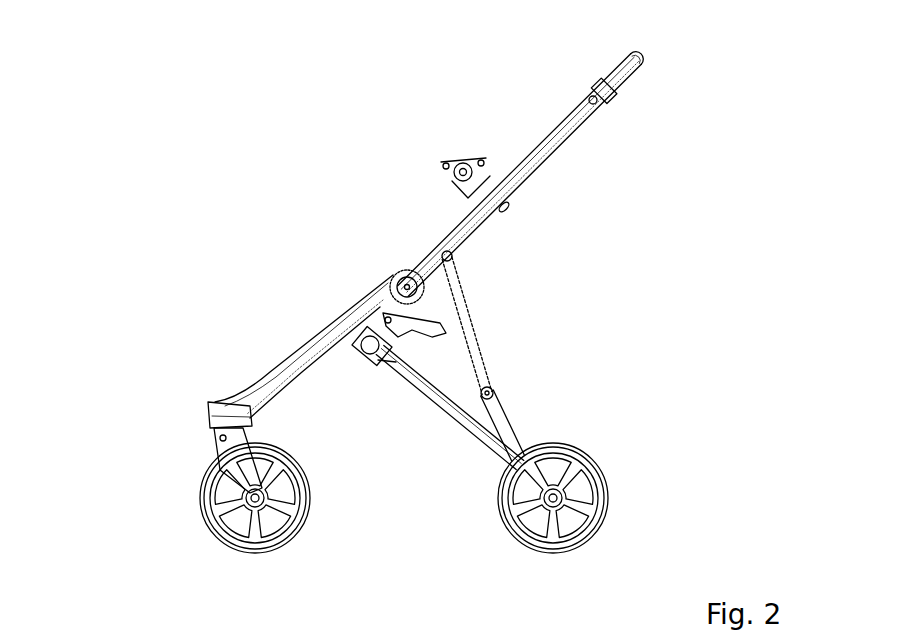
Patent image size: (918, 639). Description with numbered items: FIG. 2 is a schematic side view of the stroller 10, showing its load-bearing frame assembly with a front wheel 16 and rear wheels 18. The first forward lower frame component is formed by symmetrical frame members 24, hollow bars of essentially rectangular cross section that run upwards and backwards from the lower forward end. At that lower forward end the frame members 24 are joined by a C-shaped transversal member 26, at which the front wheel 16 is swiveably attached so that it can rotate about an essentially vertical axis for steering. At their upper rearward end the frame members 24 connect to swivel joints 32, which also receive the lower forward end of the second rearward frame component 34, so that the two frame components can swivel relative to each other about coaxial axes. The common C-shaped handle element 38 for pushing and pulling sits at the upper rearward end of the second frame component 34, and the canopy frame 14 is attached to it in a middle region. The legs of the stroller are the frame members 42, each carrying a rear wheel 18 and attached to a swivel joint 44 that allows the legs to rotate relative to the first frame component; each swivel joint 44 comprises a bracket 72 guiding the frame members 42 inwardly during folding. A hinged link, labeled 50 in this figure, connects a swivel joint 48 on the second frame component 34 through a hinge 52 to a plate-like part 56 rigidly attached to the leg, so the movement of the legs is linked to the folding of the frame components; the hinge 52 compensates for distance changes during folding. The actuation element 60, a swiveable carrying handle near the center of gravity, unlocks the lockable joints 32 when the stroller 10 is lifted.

The stroller 10 is at (757, 187).
The canopy frame 14 is at (462, 148).
The front wheel 16 is at (283, 547).
The rear wheel 18 is at (600, 478).
The frame member 24 is at (310, 355).
The transversal member 26 is at (230, 412).
The swivel joint 32 is at (397, 279).
The second rearward frame component 34 is at (553, 147).
The handle element 38 is at (645, 55).
The frame member 42 is at (482, 433).
The swivel joint 44 is at (368, 352).
The swivel joint 48 is at (452, 254).
The connecting link 50 is at (473, 343).
The hinge 52 is at (493, 388).
The plate-like part 56 is at (505, 422).
The actuation element 60 is at (440, 316).
The bracket 72 is at (385, 360).